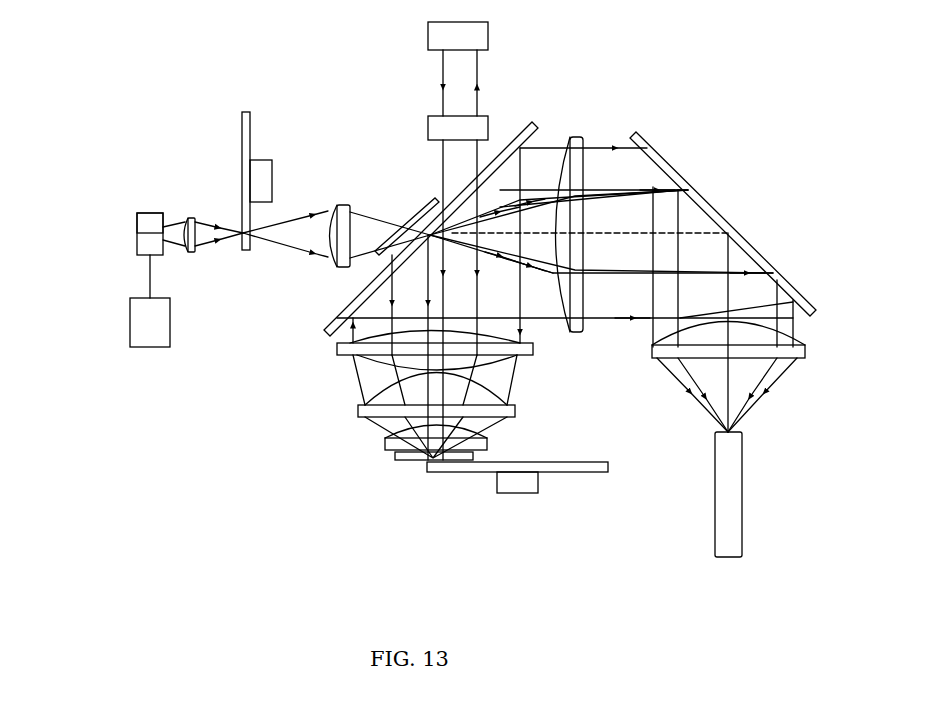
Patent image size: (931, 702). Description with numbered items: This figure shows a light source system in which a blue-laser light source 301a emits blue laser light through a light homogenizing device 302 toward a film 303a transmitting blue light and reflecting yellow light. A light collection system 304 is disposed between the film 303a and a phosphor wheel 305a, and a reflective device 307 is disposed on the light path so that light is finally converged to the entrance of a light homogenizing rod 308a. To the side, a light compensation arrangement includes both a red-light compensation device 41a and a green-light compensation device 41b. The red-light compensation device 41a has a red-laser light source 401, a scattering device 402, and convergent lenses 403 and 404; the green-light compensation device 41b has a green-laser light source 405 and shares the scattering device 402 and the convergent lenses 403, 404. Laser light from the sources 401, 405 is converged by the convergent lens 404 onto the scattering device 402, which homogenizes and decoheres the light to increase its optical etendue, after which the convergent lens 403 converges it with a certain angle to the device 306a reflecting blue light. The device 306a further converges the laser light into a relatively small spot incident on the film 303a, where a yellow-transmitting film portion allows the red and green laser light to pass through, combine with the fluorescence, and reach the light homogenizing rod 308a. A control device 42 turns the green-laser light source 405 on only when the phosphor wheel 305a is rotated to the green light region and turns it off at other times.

The blue-laser light source 301a is at (428, 37).
The light homogenizing device 302 is at (430, 128).
The film transmitting blue light and reflecting yellow light 303a is at (533, 122).
The device reflecting blue light 306a is at (418, 203).
The reflective device 307 is at (707, 197).
The light collection system 304 is at (358, 412).
The phosphor wheel 305a is at (462, 475).
The light homogenizing rod 308a is at (728, 548).
The red-laser light source 401 is at (145, 243).
The green-laser light source 405 is at (153, 222).
The control device 42 is at (143, 328).
The convergent lens 404 is at (187, 253).
The scattering device 402 is at (243, 121).
The convergent lens 403 is at (338, 207).
The red-light compensation device 41a is at (201, 209).
The green-light compensation device 41b is at (201, 285).